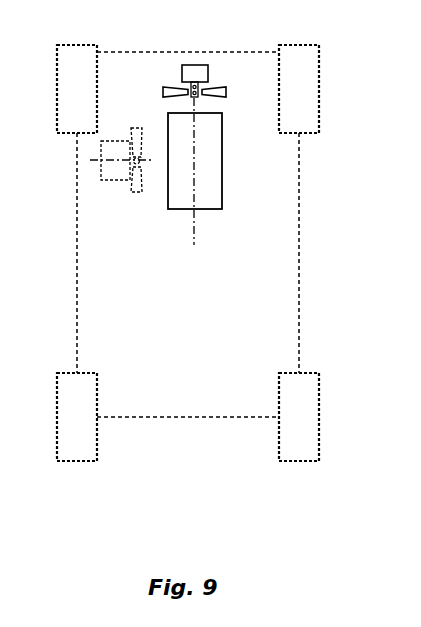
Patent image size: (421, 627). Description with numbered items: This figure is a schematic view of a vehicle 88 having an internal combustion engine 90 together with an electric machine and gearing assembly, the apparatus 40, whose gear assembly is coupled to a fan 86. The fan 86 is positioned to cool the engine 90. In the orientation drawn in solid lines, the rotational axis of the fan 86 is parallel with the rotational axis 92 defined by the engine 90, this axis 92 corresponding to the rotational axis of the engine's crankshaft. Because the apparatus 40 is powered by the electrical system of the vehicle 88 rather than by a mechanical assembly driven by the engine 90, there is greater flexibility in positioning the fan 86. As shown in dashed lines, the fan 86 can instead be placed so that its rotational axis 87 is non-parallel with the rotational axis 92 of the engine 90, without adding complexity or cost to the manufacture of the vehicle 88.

The apparatus 40 is at (185, 65).
The fan 86 is at (215, 86).
The rotational axis 87 is at (92, 161).
The vehicle 88 is at (290, 240).
The internal combustion engine 90 is at (217, 162).
The rotational axis 92 is at (195, 219).